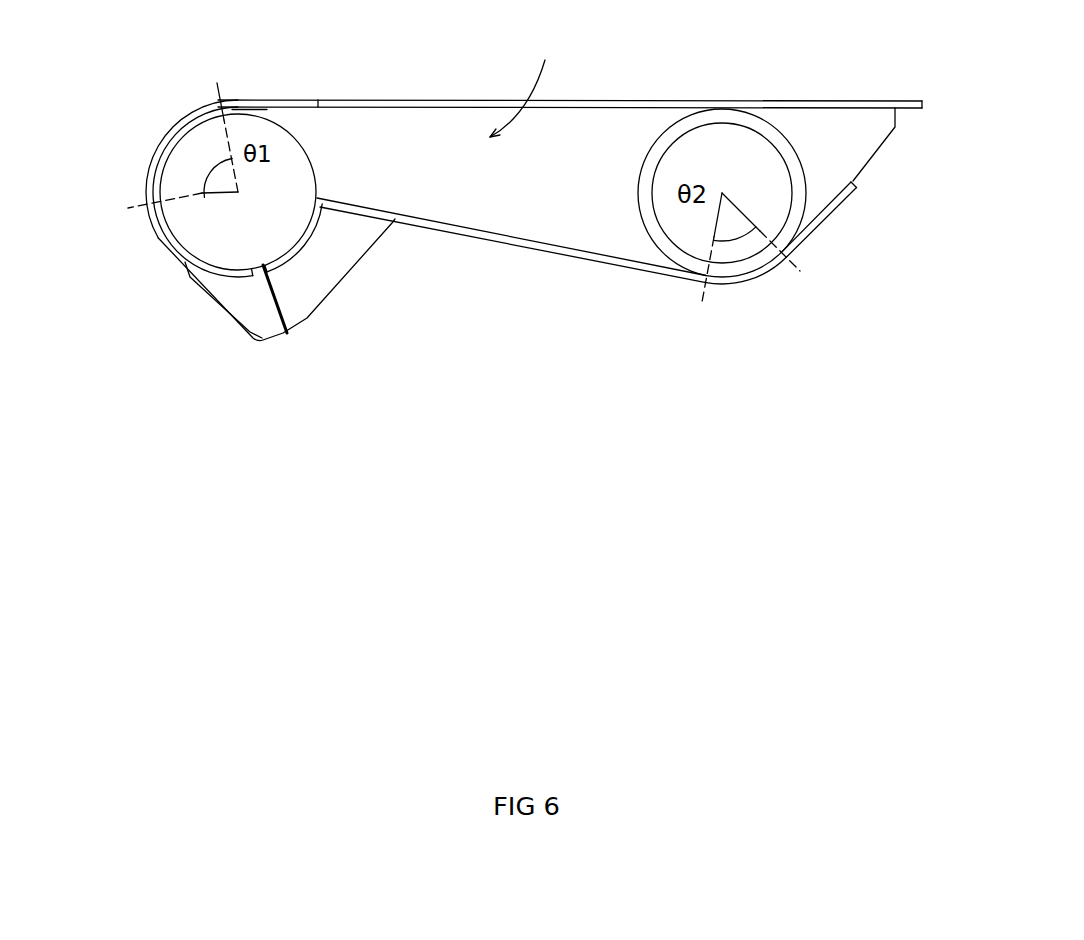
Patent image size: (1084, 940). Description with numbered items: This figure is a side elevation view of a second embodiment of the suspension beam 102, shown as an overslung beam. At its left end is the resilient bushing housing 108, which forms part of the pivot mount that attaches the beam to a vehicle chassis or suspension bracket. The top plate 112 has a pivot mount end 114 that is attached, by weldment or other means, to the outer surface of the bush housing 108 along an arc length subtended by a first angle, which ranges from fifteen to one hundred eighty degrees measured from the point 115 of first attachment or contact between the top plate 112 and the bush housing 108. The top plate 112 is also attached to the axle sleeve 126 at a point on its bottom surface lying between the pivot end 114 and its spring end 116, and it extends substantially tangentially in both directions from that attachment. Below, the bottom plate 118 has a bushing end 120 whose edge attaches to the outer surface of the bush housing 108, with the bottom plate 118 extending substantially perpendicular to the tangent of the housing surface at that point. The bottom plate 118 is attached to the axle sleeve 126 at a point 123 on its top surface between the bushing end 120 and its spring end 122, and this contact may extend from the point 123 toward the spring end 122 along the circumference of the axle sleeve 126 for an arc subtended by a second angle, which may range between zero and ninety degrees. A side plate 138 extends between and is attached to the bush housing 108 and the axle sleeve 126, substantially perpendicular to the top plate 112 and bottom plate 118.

The suspension beam 102 is at (555, 198).
The resilient bushing housing 108 is at (152, 236).
The top plate 112 is at (458, 100).
The pivot mount end 114 is at (151, 156).
The point of first attachment 115 is at (218, 100).
The spring end 116 is at (905, 100).
The bottom plate 118 is at (527, 251).
The bushing end 120 is at (321, 210).
The spring end 122 is at (852, 184).
The point of contact 123 is at (703, 287).
The axle sleeve 126 is at (678, 115).
The side plate 138 is at (524, 84).